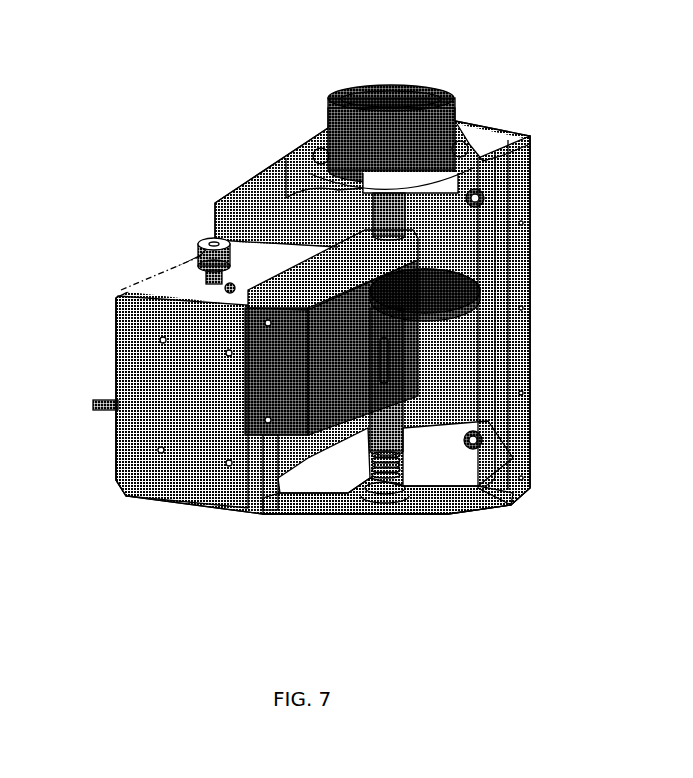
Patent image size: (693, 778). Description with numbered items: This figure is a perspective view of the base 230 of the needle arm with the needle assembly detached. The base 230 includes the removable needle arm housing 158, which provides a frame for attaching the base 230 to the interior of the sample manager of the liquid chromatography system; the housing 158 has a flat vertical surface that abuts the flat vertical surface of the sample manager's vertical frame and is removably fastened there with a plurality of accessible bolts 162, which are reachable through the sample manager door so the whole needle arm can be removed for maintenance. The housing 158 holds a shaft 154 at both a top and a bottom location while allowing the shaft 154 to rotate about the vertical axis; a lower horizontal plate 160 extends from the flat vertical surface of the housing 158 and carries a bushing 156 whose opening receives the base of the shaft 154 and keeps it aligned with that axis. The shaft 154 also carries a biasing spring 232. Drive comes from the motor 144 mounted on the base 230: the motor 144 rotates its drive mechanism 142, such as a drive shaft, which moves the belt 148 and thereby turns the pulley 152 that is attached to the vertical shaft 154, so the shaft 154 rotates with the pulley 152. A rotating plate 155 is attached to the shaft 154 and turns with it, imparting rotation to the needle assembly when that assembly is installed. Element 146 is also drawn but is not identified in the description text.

The base 230 is at (580, 117).
The motor 146 is at (390, 127).
The drive mechanism 142 is at (173, 223).
The motor 144 is at (120, 303).
The belt 148 is at (275, 245).
The rotating plate 155 is at (250, 352).
The pulley 152 is at (445, 273).
The shaft 154 is at (392, 422).
The bushing 156 is at (370, 478).
The biasing spring 232 is at (393, 462).
The removable needle arm housing 158 is at (462, 349).
The accessible bolts 162 is at (470, 197).
The horizontal plate 160 is at (293, 482).